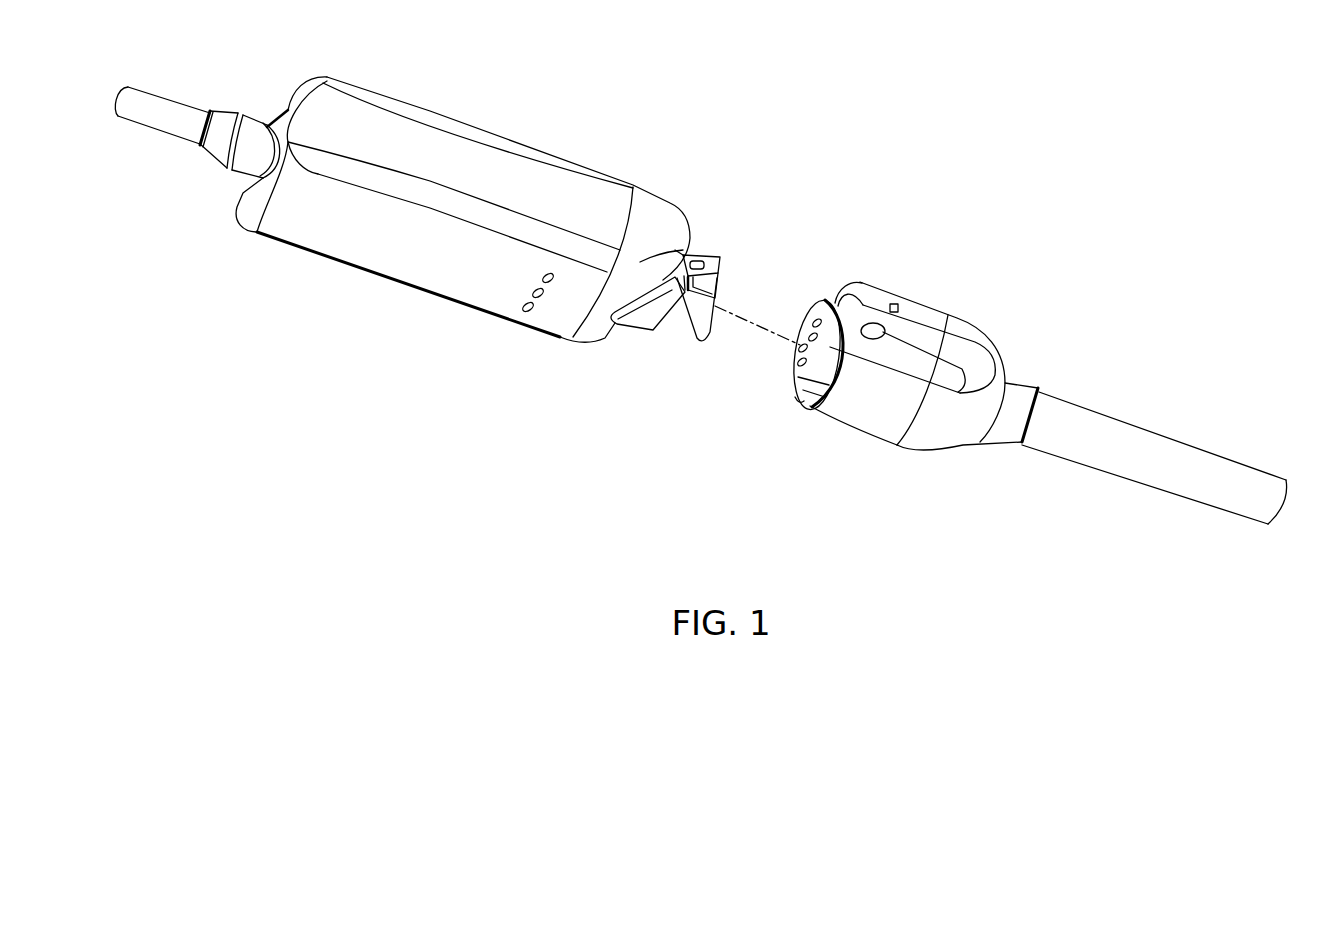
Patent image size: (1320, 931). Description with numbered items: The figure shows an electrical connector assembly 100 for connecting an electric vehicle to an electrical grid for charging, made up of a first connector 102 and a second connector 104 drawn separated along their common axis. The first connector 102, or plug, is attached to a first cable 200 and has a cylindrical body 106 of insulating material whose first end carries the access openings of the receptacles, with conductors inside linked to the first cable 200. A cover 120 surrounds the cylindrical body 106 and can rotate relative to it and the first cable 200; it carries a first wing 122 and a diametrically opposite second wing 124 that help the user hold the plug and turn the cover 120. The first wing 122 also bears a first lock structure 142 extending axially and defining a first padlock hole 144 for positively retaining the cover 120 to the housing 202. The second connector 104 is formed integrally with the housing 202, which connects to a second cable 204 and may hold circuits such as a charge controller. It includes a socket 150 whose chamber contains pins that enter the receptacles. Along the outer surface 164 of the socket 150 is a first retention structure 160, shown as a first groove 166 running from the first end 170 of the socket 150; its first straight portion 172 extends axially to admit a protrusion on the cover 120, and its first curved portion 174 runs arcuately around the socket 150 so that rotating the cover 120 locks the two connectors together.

The electrical connector assembly 100 is at (1002, 100).
The first connector 102 is at (888, 356).
The second connector 104 is at (702, 299).
The cylindrical body 106 is at (835, 323).
The cover 120 is at (843, 367).
The first wing 122 is at (921, 327).
The second wing 124 is at (799, 402).
The first lock structure 142 is at (890, 303).
The first padlock hole 144 is at (868, 316).
The socket 150 is at (698, 278).
The first retention structure 160 is at (715, 305).
The outer surface 164 is at (681, 303).
The first groove 166 is at (674, 322).
The first end 170 is at (717, 267).
The first straight portion 172 is at (706, 278).
The first curved portion 174 is at (675, 250).
The first cable 200 is at (1161, 430).
The housing 202 is at (440, 138).
The second cable 204 is at (160, 131).